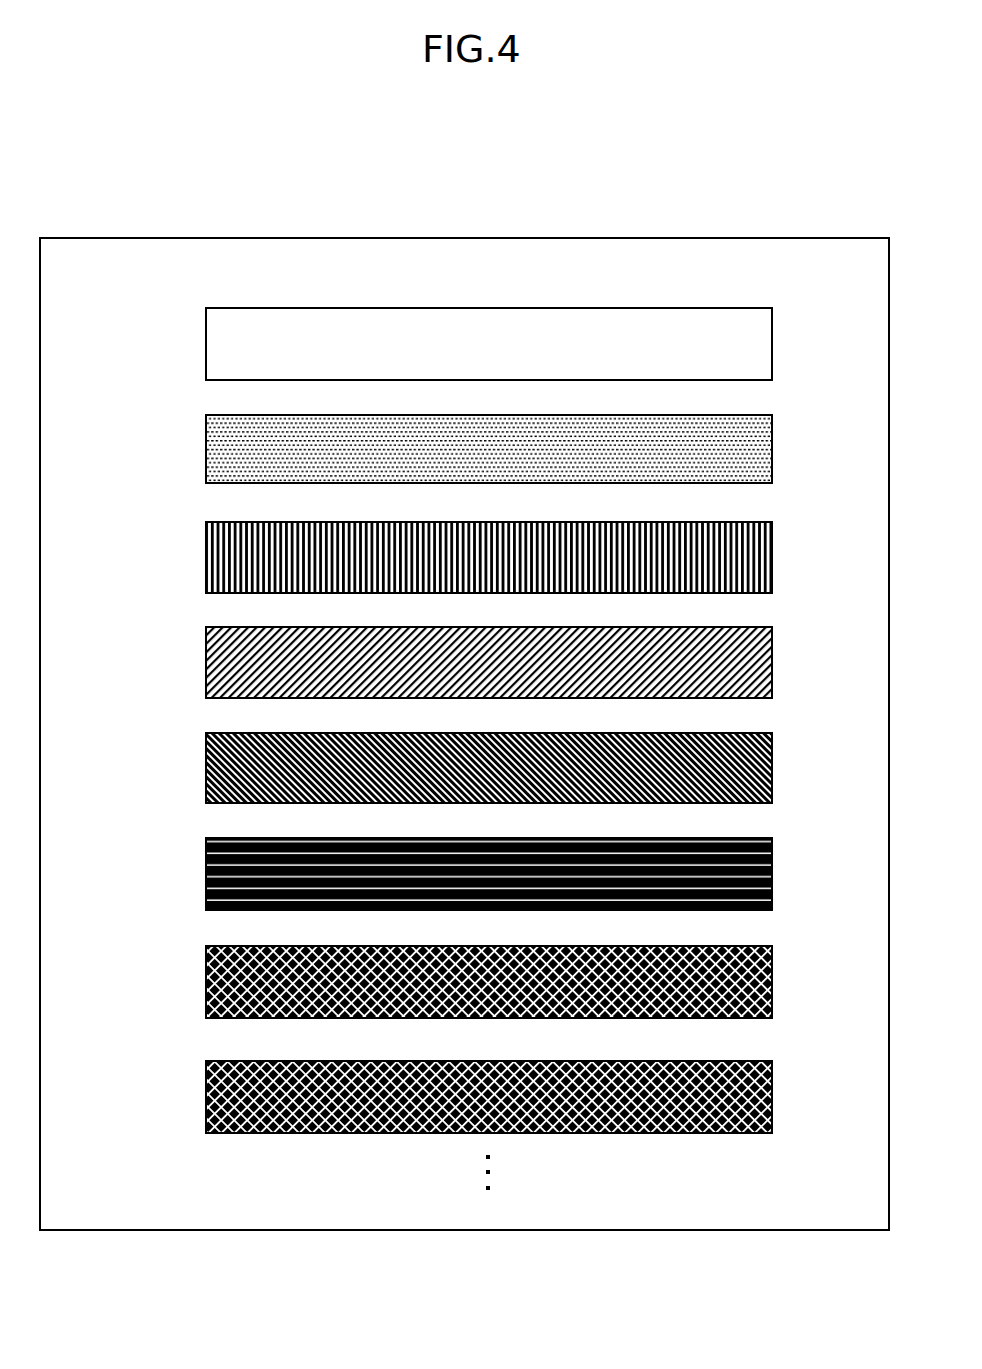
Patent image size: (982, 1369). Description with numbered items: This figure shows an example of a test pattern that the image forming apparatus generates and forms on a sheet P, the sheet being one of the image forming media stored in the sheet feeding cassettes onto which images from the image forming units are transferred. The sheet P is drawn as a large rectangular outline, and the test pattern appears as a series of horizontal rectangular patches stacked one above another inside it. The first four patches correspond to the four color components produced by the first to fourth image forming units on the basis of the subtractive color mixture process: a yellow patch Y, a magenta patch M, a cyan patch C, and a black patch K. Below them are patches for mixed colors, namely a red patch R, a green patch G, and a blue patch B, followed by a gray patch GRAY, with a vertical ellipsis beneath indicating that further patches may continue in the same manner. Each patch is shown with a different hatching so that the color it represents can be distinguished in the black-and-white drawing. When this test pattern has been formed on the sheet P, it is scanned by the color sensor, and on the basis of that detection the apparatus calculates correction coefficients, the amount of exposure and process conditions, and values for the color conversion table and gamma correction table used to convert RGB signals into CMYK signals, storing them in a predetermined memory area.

The sheet P is at (447, 238).
The yellow patch Y is at (206, 344).
The magenta patch M is at (206, 450).
The cyan patch C is at (206, 558).
The black patch K is at (206, 664).
The red patch R is at (206, 772).
The green patch G is at (206, 876).
The blue patch B is at (206, 984).
The gray patch GRAY is at (206, 1100).